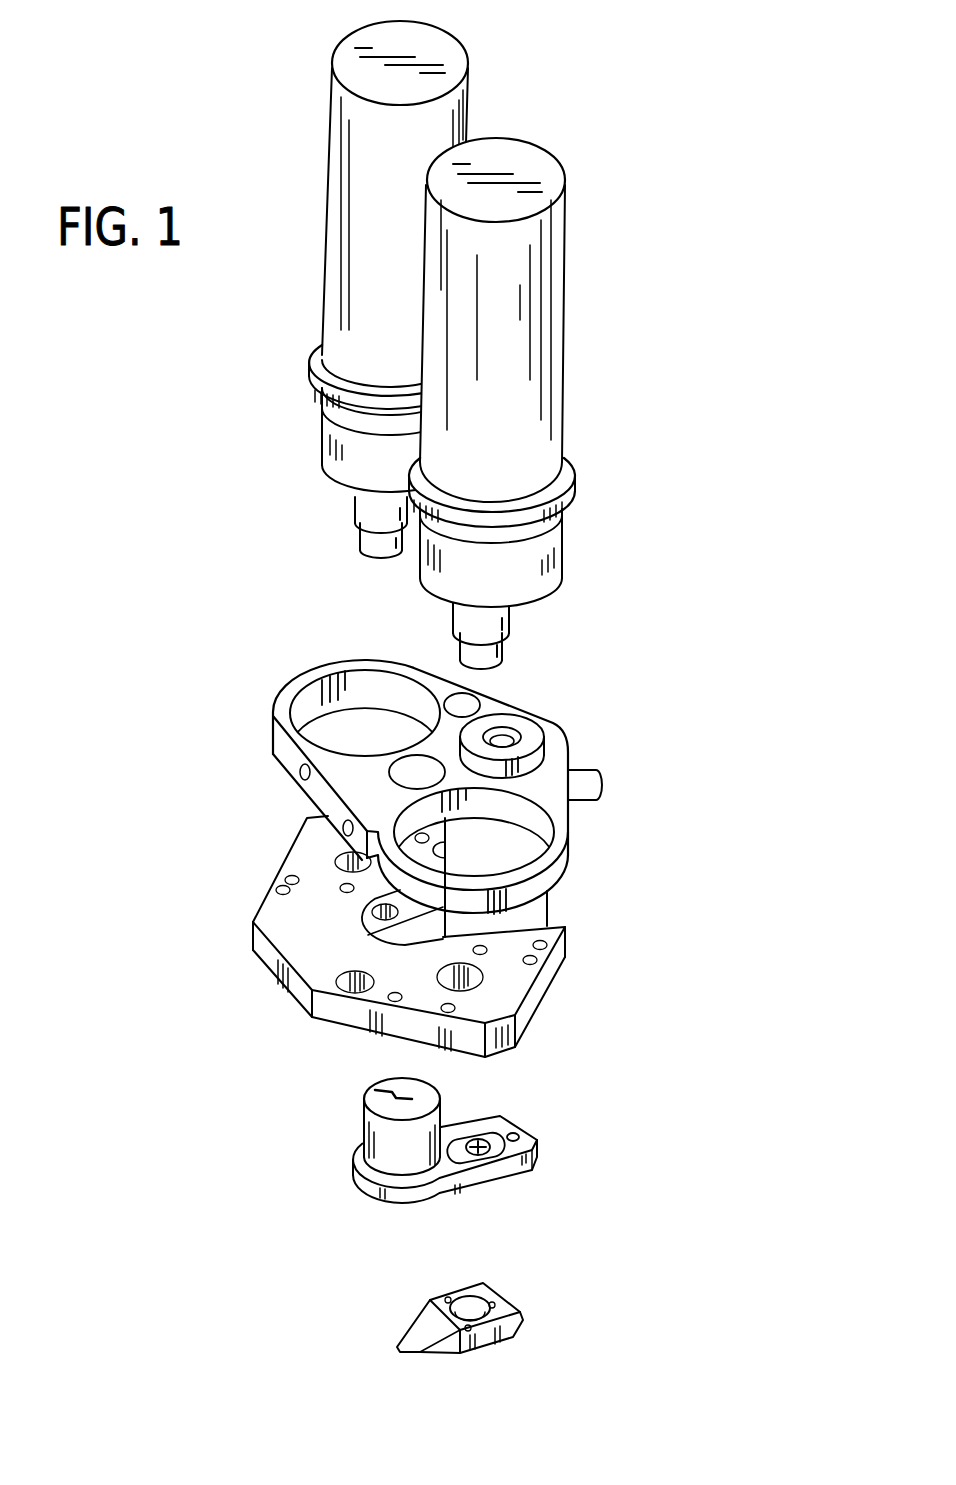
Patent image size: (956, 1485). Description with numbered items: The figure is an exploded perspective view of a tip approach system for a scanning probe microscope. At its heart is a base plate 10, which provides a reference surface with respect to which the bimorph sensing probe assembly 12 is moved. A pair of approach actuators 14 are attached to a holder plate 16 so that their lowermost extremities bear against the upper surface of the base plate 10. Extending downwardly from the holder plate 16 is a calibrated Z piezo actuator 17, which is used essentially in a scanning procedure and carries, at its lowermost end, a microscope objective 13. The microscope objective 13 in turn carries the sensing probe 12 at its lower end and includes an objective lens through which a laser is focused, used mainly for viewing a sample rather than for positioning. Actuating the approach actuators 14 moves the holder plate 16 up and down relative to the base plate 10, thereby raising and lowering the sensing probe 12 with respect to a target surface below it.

The base plate 10 is at (467, 936).
The bimorph sensing probe assembly 12 is at (513, 1302).
The microscope objective 13 is at (544, 1133).
The approach actuators 14 is at (496, 345).
The holder plate 16 is at (556, 705).
The Z piezo actuator 17 is at (532, 877).